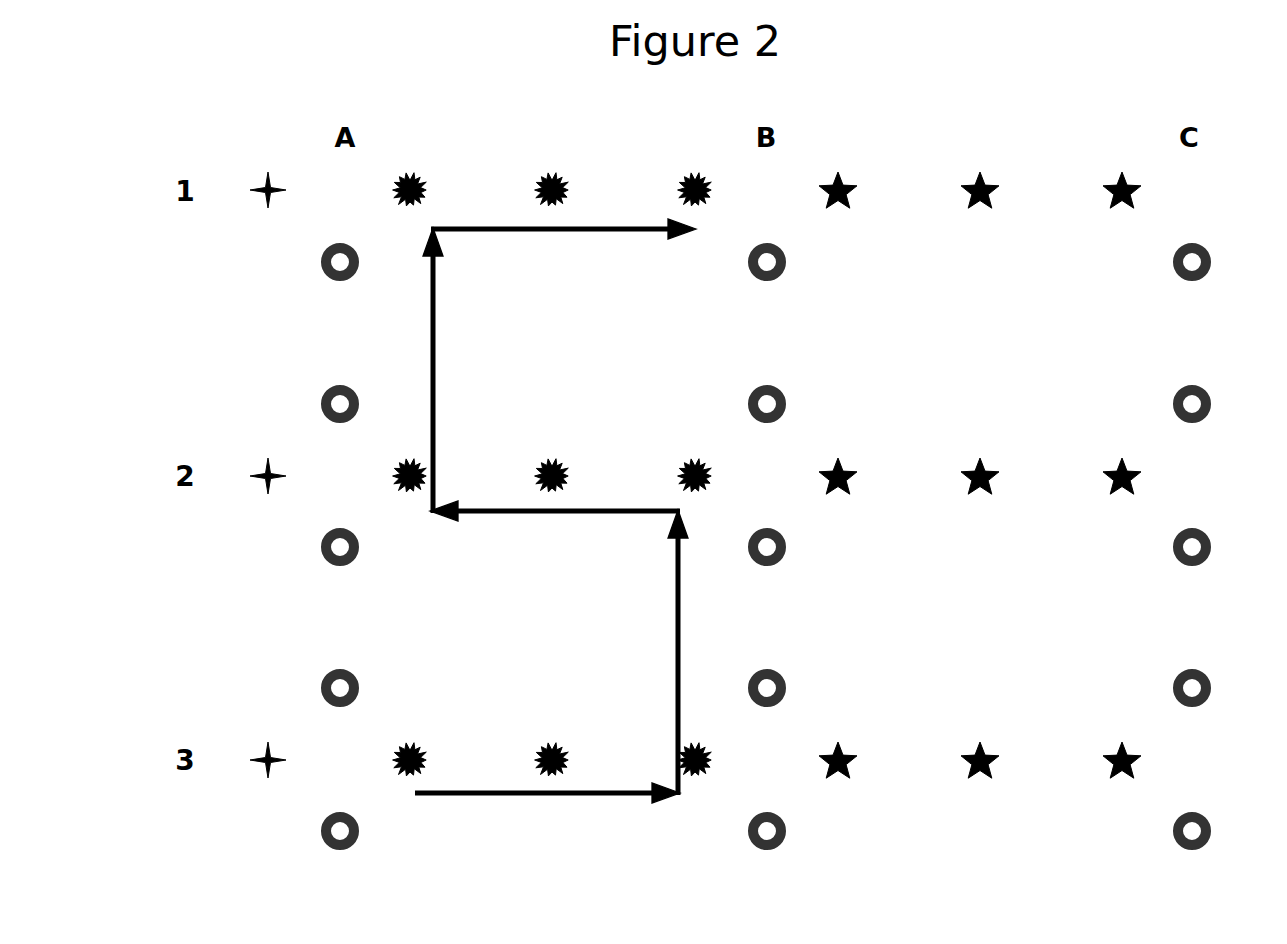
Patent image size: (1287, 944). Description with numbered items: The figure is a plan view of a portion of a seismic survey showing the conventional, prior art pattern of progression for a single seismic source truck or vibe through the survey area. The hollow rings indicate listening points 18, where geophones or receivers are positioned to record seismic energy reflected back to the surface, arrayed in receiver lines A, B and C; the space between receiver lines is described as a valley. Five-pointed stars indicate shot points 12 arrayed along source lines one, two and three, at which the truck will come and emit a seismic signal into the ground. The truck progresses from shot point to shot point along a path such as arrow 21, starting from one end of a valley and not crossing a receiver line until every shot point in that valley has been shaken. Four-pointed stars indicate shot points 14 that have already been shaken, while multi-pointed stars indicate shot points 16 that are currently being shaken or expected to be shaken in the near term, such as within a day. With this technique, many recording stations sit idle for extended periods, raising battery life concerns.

The shot points 12 is at (852, 193).
The shot points that have already been shaken 14 is at (262, 205).
The shot points currently being shaken or expected to be shaken 16 is at (566, 468).
The listening points 18 is at (788, 404).
The arrow 21 is at (437, 290).